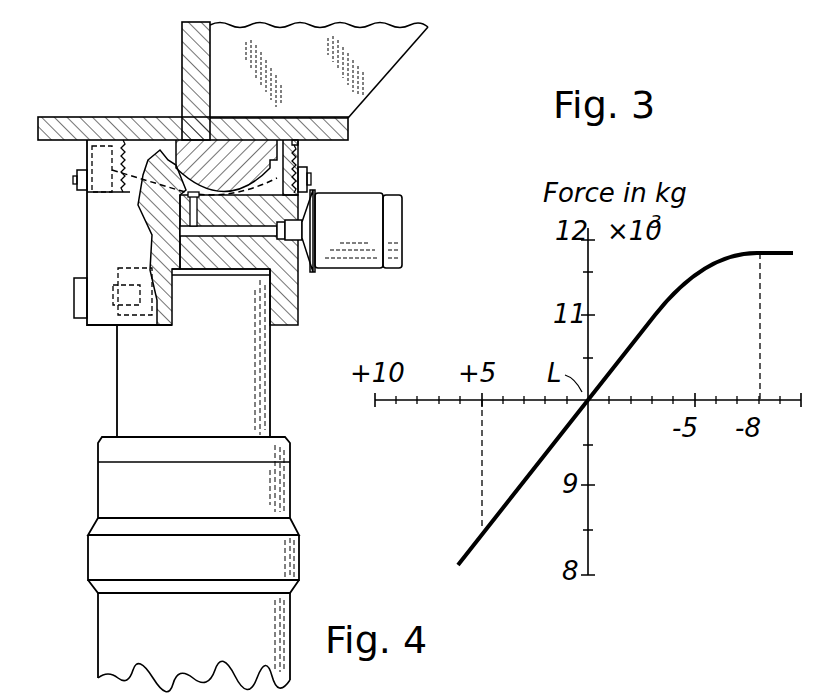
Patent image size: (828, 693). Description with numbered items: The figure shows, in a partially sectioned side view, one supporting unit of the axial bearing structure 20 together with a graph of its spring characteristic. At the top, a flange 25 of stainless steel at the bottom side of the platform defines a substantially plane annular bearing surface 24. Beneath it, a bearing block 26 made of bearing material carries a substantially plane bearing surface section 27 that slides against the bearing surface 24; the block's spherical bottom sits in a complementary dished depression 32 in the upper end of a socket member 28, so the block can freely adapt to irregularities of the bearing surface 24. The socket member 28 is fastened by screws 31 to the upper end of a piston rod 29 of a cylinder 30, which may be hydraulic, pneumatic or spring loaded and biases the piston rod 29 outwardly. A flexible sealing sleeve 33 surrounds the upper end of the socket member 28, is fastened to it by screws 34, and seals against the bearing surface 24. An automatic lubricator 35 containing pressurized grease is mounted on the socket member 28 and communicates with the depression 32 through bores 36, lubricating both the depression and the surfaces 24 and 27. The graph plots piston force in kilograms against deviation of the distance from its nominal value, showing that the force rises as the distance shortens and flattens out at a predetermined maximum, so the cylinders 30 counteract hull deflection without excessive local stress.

The axial bearing structure 20 is at (80, 266).
The annular bearing surface 24 is at (80, 140).
The flange 25 is at (80, 118).
The bearing block 26 is at (232, 130).
The bearing surface section 27 is at (180, 117).
The socket member 28 is at (100, 228).
The piston rod 29 is at (258, 365).
The cylinder 30 is at (278, 487).
The screw 31 is at (77, 295).
The dished depression 32 is at (258, 172).
The flexible sealing sleeve 33 is at (298, 156).
The screw 34 is at (80, 181).
The automatic lubricator 35 is at (367, 258).
The bore 36 is at (258, 233).